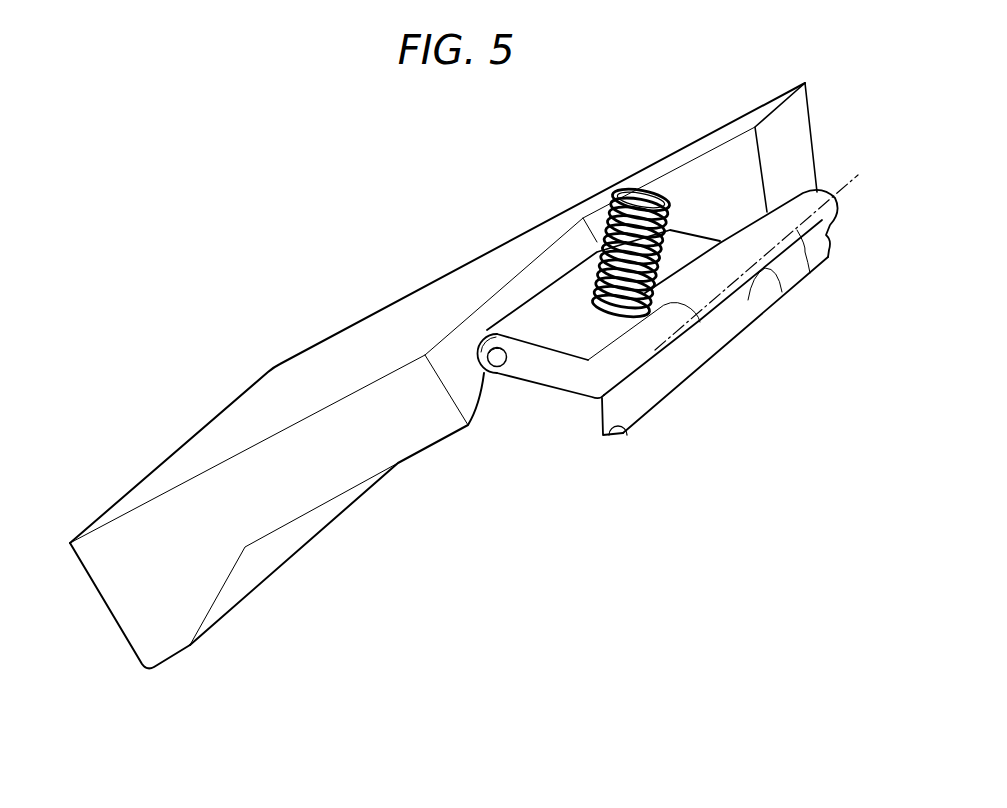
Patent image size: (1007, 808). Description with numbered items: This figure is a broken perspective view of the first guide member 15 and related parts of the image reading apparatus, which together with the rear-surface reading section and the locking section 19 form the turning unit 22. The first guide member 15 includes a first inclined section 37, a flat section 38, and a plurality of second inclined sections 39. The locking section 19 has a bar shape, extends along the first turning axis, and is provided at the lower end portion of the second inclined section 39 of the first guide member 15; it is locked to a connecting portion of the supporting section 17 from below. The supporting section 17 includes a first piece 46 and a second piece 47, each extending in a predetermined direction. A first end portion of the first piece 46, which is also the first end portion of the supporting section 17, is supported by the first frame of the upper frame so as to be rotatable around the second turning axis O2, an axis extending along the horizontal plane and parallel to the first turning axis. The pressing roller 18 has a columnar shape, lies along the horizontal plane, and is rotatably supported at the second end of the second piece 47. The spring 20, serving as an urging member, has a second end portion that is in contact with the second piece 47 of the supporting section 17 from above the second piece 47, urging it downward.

The turning unit 22 is at (117, 137).
The first guide member 15 is at (148, 472).
The first inclined section 37 is at (172, 627).
The flat section 38 is at (312, 487).
The second inclined section 39 is at (800, 153).
The spring 20 is at (627, 187).
The supporting section 17 is at (505, 507).
The first piece 46 is at (638, 363).
The second piece 47 is at (555, 377).
The pressing roller 18 is at (522, 323).
The locking section 19 is at (620, 437).
The second turning axis O2 is at (797, 232).